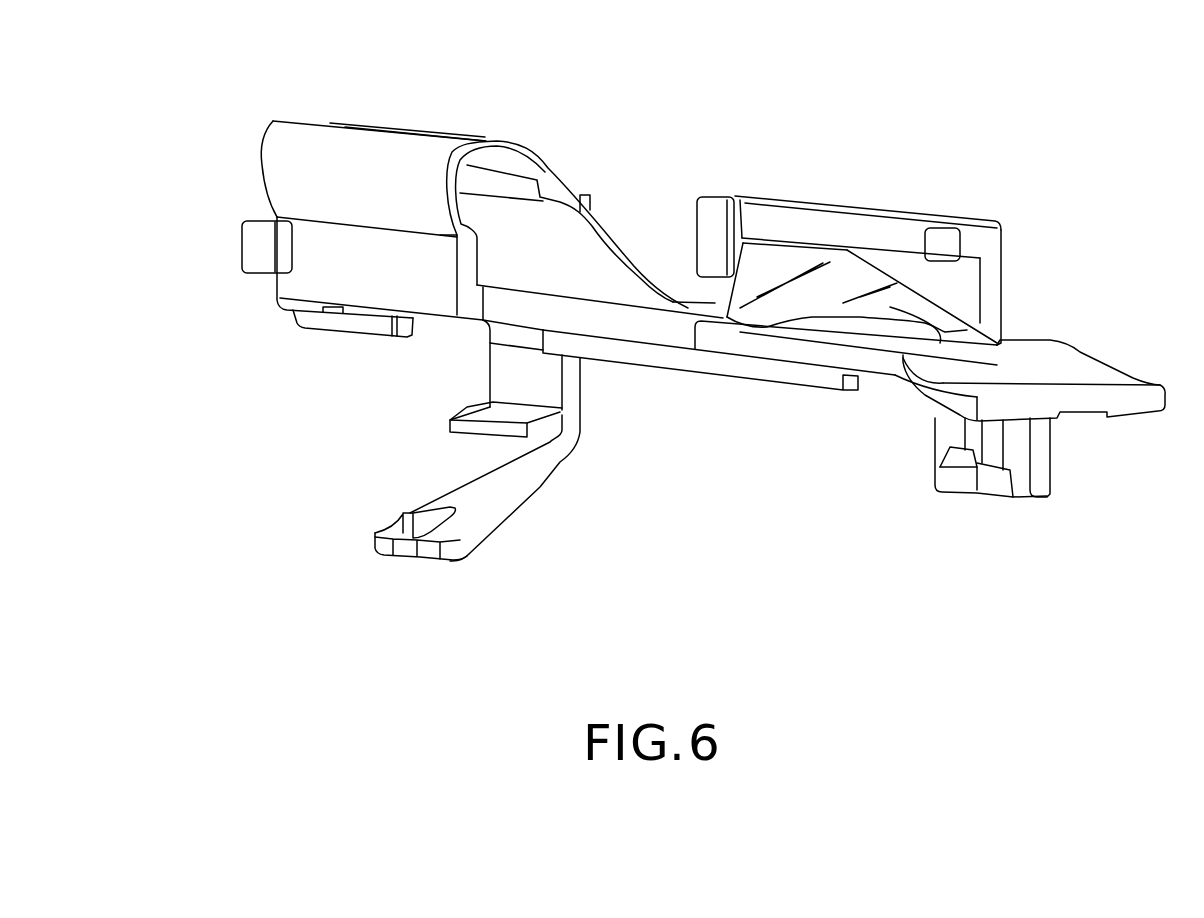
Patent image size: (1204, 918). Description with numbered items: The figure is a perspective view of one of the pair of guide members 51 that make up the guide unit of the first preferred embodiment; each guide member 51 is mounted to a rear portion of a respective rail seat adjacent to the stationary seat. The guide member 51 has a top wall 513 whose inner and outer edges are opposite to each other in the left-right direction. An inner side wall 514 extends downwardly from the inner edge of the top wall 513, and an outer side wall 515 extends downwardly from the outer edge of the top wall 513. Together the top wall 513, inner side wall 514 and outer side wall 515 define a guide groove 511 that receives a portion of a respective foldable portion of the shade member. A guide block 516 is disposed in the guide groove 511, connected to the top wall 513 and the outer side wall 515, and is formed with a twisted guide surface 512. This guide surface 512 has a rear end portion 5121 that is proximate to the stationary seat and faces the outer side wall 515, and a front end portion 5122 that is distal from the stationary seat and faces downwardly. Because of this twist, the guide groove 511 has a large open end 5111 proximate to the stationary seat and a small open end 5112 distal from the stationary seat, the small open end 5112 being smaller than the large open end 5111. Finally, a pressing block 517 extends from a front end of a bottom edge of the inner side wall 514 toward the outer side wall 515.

The guide member 51 is at (1019, 208).
The guide groove 511 is at (930, 270).
The large open end 5111 is at (966, 280).
The small open end 5112 is at (744, 242).
The twisted guide surface 512 is at (890, 308).
The rear end portion 5121 is at (1004, 330).
The front end portion 5122 is at (757, 263).
The top wall 513 is at (1004, 299).
The inner side wall 514 is at (873, 236).
The outer side wall 515 is at (783, 352).
The guide block 516 is at (913, 330).
The pressing block 517 is at (710, 247).